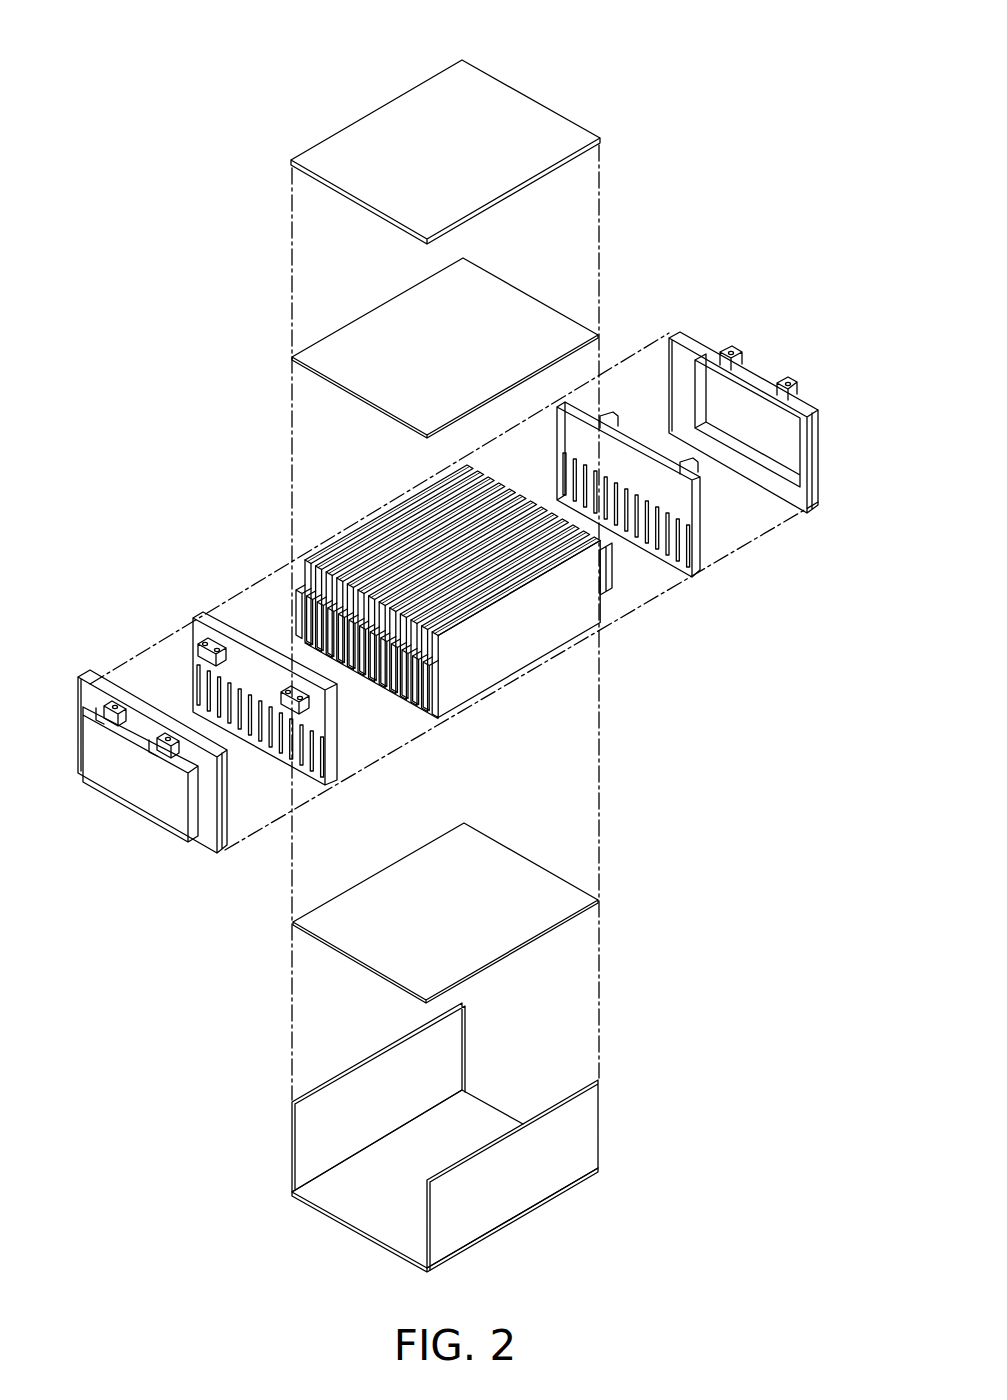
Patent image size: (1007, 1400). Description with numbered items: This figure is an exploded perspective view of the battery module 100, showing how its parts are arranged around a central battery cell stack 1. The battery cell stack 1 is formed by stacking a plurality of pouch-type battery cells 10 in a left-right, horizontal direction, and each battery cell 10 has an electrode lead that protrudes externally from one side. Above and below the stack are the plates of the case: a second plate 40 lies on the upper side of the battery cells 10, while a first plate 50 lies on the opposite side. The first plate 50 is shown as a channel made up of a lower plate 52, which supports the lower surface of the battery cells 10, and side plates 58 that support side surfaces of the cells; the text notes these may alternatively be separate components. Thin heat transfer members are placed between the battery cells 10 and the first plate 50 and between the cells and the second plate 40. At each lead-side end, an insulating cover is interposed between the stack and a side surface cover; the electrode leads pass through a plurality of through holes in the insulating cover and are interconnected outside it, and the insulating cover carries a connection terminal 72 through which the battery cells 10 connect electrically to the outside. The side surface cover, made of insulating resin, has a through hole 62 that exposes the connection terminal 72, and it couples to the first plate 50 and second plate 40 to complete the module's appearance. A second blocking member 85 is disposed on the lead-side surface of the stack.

The battery module 100 is at (167, 31).
The battery cell stack 1 is at (521, 657).
The battery cell 10 is at (430, 680).
The second plate 40 is at (517, 102).
The first plate 50 is at (391, 1137).
The lower plate 52 is at (230, 1147).
The side plate 58 is at (292, 1160).
The through hole 62 is at (183, 763).
The connection terminal 72 is at (207, 646).
The second blocking member 85 is at (425, 718).